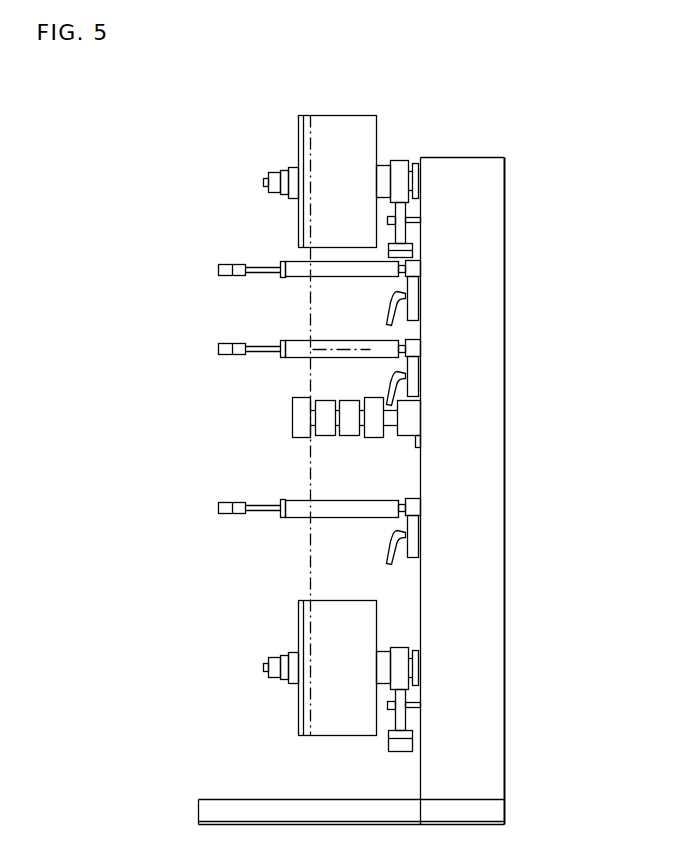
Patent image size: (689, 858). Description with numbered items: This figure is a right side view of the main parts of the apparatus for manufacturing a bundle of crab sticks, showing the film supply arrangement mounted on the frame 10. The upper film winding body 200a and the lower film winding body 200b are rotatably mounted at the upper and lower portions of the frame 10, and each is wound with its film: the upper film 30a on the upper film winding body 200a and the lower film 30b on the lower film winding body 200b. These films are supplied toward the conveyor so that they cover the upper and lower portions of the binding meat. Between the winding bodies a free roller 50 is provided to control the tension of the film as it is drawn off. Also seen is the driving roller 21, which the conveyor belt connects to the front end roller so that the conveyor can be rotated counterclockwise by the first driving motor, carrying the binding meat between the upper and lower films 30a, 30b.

The frame 10 is at (505, 477).
The upper film winding body 200a is at (302, 128).
The lower film winding body 200b is at (303, 706).
The free roller 50 is at (290, 262).
The upper film 30a is at (310, 316).
The lower film 30b is at (310, 562).
The driving roller 21 is at (295, 413).